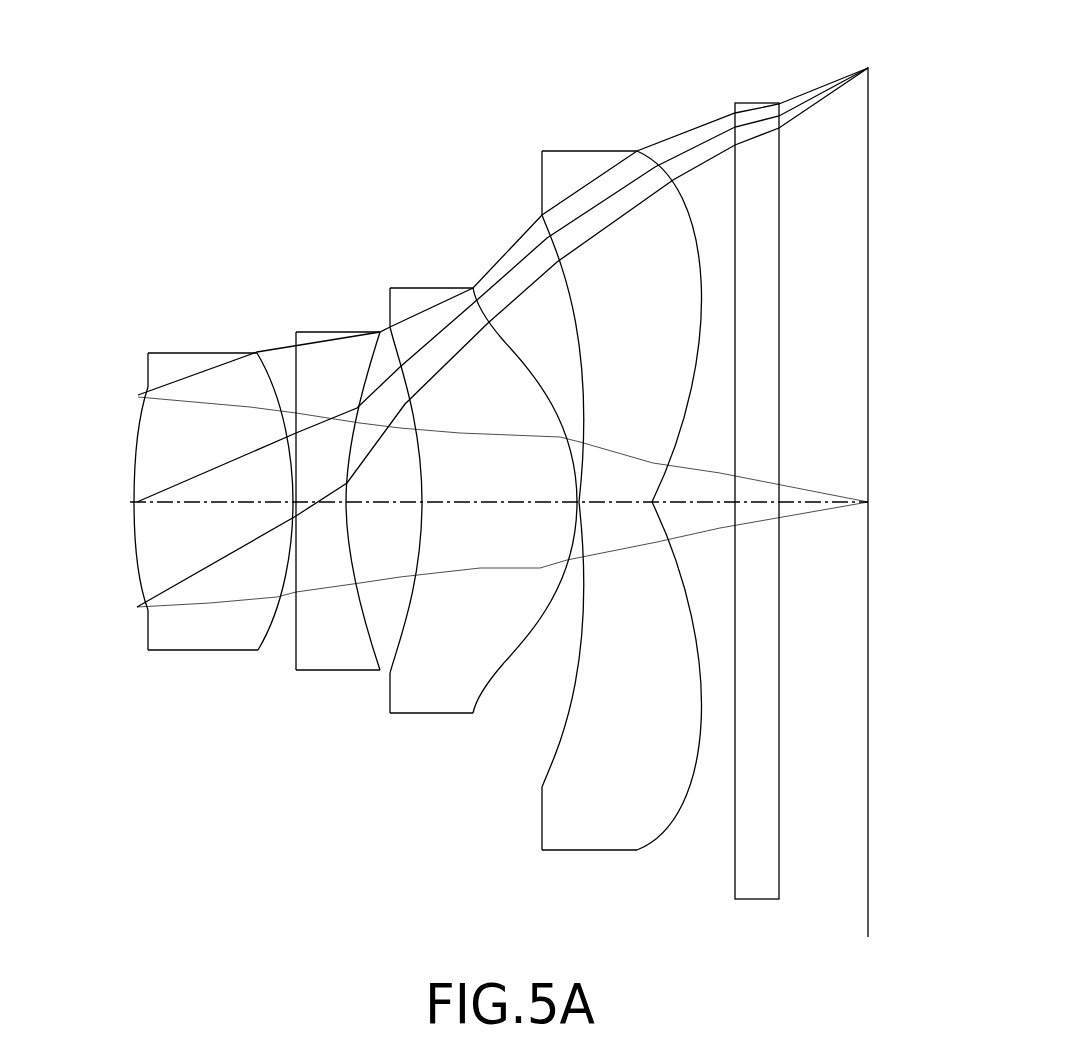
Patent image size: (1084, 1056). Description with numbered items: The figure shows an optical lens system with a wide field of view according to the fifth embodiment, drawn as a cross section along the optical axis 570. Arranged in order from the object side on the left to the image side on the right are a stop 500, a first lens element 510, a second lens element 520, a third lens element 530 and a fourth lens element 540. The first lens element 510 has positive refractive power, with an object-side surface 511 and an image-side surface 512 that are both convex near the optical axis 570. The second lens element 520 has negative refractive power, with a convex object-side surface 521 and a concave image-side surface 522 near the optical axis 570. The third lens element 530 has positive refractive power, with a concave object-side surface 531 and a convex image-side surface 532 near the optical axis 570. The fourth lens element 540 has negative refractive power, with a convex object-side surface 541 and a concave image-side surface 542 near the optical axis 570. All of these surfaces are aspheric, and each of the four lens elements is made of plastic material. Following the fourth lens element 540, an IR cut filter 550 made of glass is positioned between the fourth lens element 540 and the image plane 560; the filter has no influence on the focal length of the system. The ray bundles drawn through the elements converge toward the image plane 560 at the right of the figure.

The stop 500 is at (140, 393).
The first lens element 510 is at (197, 484).
The object-side surface of the first lens element 511 is at (138, 572).
The image-side surface of the first lens element 512 is at (270, 608).
The second lens element 520 is at (322, 495).
The object-side surface of the second lens element 521 is at (297, 618).
The image-side surface of the second lens element 522 is at (360, 613).
The third lens element 530 is at (476, 485).
The object-side surface of the third lens element 531 is at (412, 623).
The image-side surface of the third lens element 532 is at (508, 655).
The fourth lens element 540 is at (585, 490).
The object-side surface of the fourth lens element 541 is at (563, 718).
The image-side surface of the fourth lens element 542 is at (685, 800).
The IR cut filter 550 is at (755, 101).
The image plane 560 is at (867, 887).
The optical axis 570 is at (832, 500).